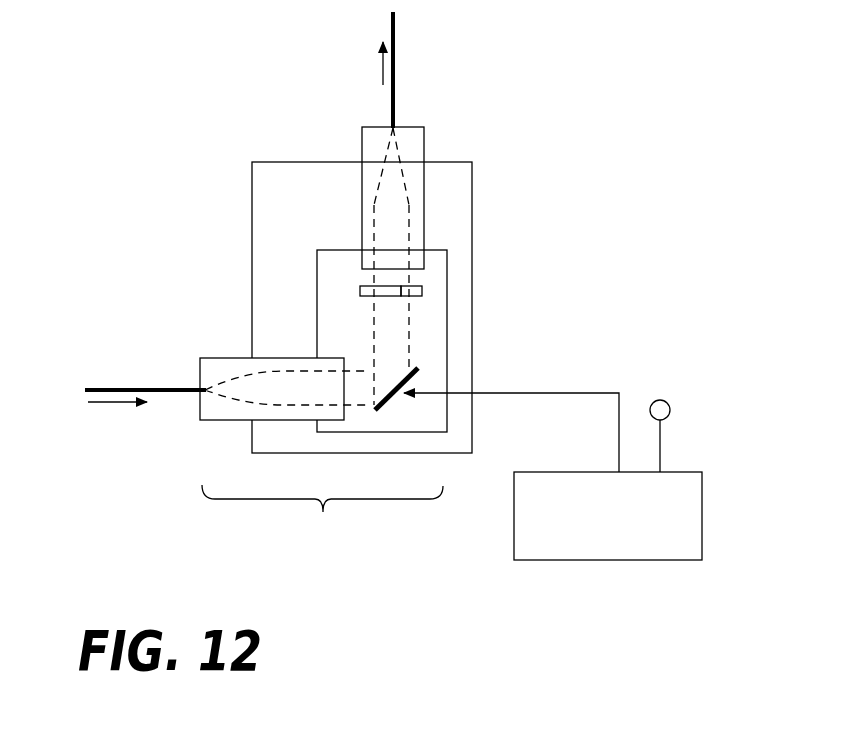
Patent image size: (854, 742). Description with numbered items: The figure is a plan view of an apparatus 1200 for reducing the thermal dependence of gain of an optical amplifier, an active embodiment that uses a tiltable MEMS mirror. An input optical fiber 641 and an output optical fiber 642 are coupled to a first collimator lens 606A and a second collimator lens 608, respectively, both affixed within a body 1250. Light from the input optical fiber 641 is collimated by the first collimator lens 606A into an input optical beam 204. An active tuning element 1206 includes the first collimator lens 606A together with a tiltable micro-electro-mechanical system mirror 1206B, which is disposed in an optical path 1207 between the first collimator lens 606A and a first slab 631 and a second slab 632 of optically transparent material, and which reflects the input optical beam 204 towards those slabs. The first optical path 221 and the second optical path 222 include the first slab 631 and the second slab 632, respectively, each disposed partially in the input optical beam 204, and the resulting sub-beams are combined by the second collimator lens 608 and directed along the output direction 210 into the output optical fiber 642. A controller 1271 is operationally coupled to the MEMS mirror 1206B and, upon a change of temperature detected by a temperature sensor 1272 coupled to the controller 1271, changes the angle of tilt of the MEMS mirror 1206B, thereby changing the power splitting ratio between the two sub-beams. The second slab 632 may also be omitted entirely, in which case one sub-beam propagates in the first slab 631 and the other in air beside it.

The apparatus 1200 is at (599, 207).
The body 1250 is at (332, 212).
The active tuning element 1206 is at (324, 399).
The tiltable MEMS mirror 1206B is at (420, 380).
The optical path 1207 is at (360, 420).
The second collimator lens 608 is at (423, 140).
The first collimator lens 606A is at (198, 412).
The output optical fiber 642 is at (396, 62).
The input optical fiber 641 is at (137, 386).
The output beam direction 210 is at (382, 65).
The input optical beam 204 is at (108, 403).
The second slab of optically transparent material 632 is at (360, 288).
The first slab of optically transparent material 631 is at (424, 288).
The second optical path 222 is at (385, 343).
The first optical path 221 is at (407, 342).
The controller 1271 is at (638, 529).
The temperature sensor 1272 is at (670, 417).